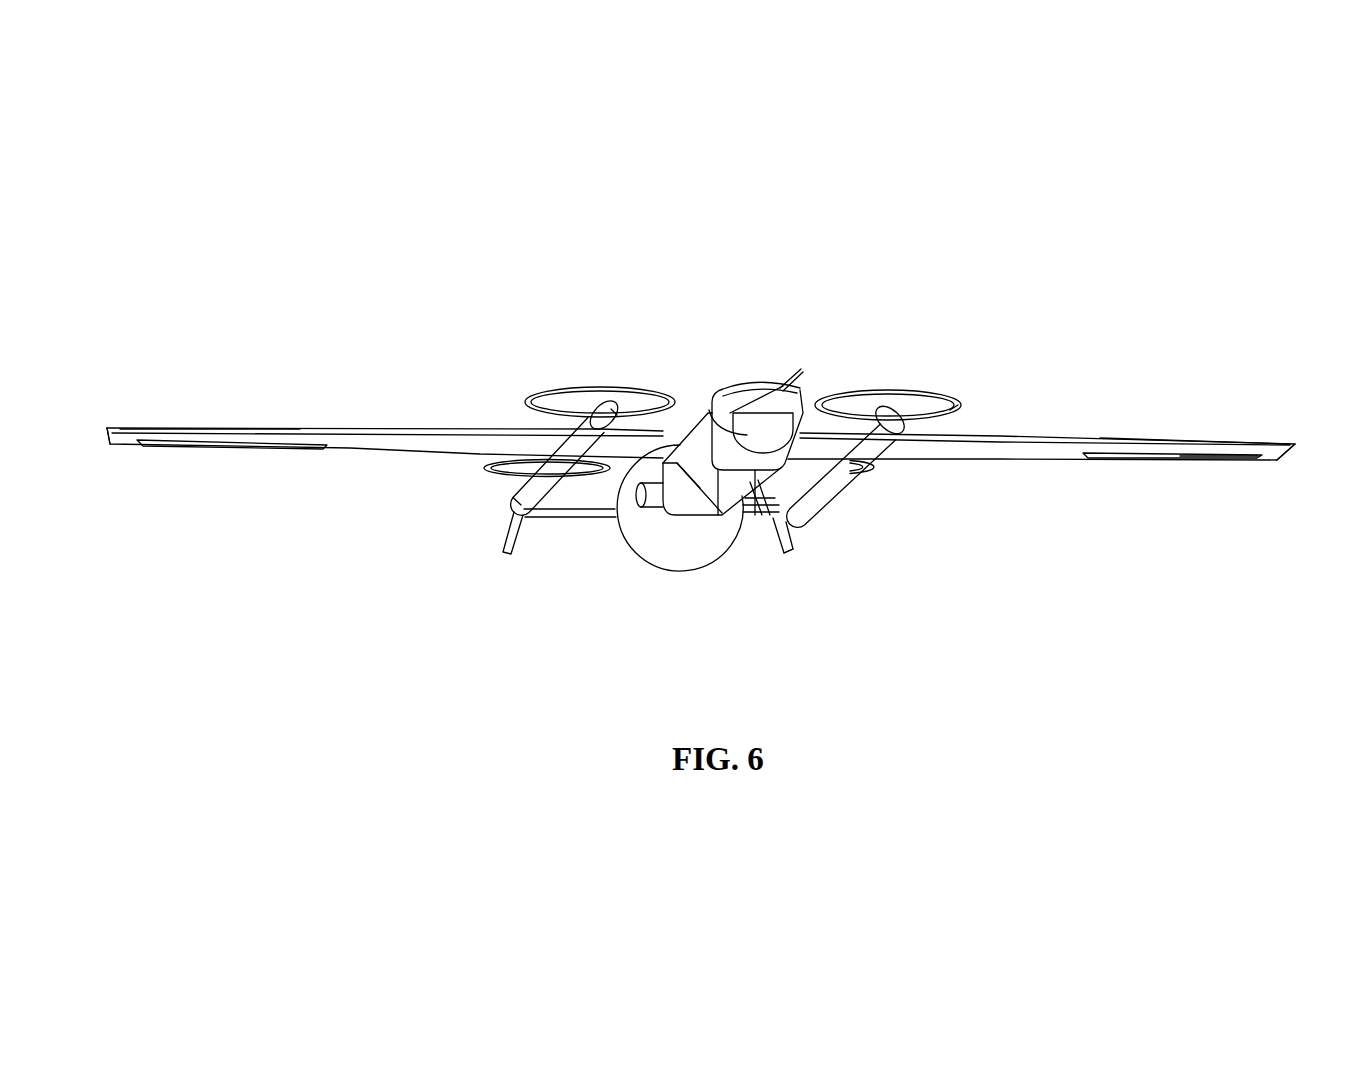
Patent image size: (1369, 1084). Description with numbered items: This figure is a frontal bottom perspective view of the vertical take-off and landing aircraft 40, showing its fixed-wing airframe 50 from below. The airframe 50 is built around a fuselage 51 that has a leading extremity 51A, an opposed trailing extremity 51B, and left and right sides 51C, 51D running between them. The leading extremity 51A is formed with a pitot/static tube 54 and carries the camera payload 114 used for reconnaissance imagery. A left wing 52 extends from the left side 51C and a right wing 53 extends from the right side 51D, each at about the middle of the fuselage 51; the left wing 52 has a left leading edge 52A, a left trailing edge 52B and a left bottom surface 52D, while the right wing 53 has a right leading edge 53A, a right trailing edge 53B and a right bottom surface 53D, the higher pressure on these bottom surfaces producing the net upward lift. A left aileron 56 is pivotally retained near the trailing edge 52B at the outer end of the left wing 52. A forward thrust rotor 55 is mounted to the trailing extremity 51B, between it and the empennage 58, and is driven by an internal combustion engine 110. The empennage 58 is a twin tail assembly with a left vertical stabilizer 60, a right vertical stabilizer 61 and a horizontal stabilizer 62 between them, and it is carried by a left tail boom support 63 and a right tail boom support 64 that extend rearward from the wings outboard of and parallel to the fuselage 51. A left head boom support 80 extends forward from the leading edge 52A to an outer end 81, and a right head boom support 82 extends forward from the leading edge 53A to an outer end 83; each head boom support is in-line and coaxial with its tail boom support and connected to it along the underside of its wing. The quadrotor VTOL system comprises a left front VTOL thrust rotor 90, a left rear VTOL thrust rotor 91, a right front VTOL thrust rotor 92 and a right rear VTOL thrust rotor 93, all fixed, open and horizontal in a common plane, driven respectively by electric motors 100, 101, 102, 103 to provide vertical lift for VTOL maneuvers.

The VTOL aircraft 40 is at (1000, 284).
The airframe 50 is at (713, 458).
The fuselage 51 is at (747, 451).
The leading extremity 51A is at (752, 380).
The trailing extremity 51B is at (718, 470).
The left side 51C is at (755, 470).
The right side 51D is at (685, 474).
The left wing 52 is at (1040, 435).
The left leading edge 52A is at (1172, 440).
The left trailing edge 52B is at (1276, 461).
The left bottom surface 52D is at (1061, 455).
The right wing 53 is at (288, 427).
The right leading edge 53A is at (215, 427).
The right trailing edge 53B is at (109, 445).
The right bottom surface 53D is at (352, 449).
The pitot/static tube 54 is at (800, 370).
The forward thrust rotor 55 is at (632, 541).
The left aileron 56 is at (1213, 460).
The empennage 58 is at (792, 556).
The left vertical stabilizer 60 is at (795, 536).
The right vertical stabilizer 61 is at (520, 526).
The horizontal stabilizer 62 is at (572, 519).
The left tail boom support 63 is at (822, 487).
The right tail boom support 64 is at (509, 504).
The left head boom support 80 is at (919, 371).
The outer end 81 is at (913, 399).
The right head boom support 82 is at (578, 412).
The outer end 83 is at (616, 407).
The left front VTOL thrust rotor 90 is at (951, 409).
The left rear VTOL thrust rotor 91 is at (876, 471).
The right front VTOL thrust rotor 92 is at (596, 356).
The right rear VTOL thrust rotor 93 is at (483, 473).
The electric motor 100 is at (889, 405).
The electric motor 101 is at (808, 469).
The electric motor 102 is at (601, 402).
The electric motor 103 is at (537, 462).
The internal combustion engine 110 is at (650, 516).
The camera payload 114 is at (709, 410).